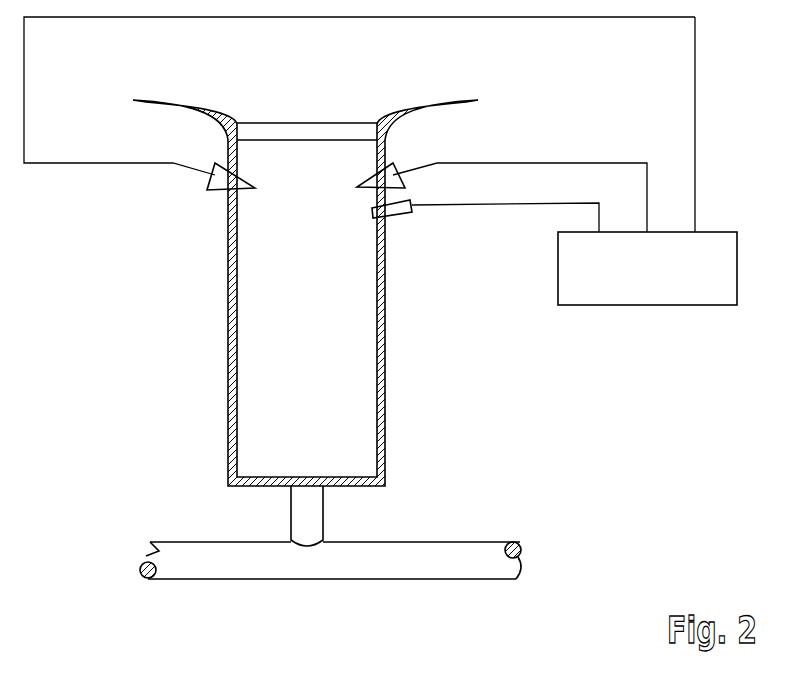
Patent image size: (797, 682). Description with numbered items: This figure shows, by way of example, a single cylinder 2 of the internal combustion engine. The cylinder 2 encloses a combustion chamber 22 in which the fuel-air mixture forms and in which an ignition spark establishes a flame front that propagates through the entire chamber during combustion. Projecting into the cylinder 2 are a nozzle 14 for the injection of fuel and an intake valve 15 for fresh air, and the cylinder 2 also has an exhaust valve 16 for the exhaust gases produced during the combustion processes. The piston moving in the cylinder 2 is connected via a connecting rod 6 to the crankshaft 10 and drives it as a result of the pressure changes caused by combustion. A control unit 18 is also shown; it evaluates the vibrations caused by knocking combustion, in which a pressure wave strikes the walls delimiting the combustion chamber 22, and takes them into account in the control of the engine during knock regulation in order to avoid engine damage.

The cylinder 2 is at (85, 252).
The combustion chamber 22 is at (257, 290).
The exhaust valve 16 is at (203, 181).
The intake valve 15 is at (396, 173).
The nozzle 14 is at (403, 212).
The control unit 18 is at (655, 295).
The connecting rod 6 is at (307, 517).
The crankshaft 10 is at (152, 548).